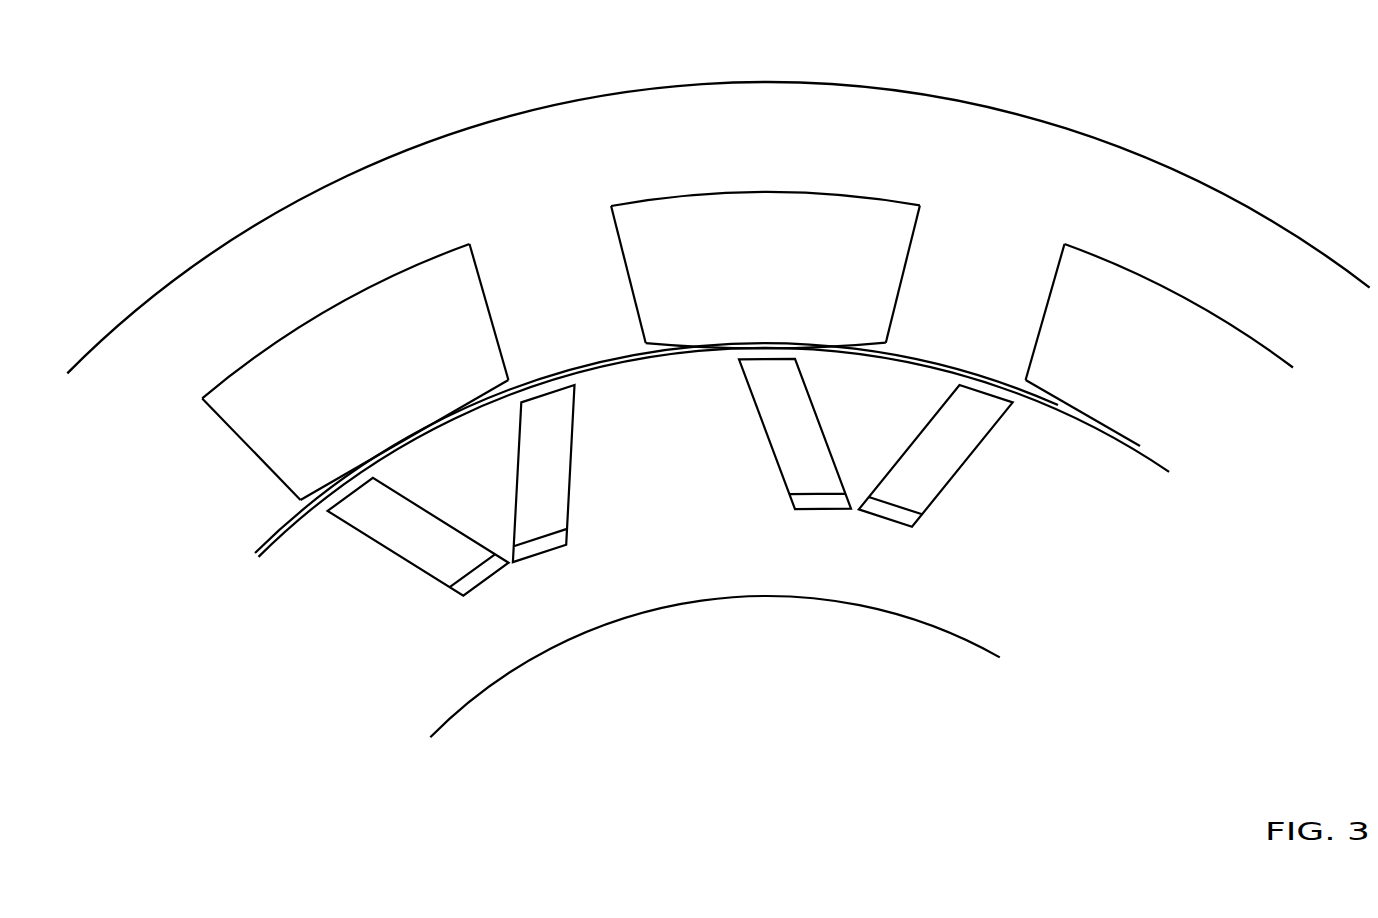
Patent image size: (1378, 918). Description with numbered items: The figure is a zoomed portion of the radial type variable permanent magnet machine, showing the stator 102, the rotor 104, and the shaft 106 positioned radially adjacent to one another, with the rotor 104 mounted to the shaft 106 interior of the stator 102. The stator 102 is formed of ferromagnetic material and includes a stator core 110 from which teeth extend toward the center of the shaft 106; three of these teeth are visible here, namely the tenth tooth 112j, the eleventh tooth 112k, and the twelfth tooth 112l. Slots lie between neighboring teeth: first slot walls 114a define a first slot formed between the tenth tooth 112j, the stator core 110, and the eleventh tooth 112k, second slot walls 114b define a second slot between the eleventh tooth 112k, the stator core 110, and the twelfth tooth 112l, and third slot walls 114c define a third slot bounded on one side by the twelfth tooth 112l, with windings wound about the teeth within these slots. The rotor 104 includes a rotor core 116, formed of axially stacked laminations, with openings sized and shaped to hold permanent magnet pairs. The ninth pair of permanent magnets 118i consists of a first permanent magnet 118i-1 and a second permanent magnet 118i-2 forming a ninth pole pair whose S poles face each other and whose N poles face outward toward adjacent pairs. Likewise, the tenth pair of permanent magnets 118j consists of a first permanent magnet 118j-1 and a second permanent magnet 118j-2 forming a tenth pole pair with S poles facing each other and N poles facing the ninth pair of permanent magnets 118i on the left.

The stator 102 is at (1078, 118).
The rotor 104 is at (1182, 464).
The shaft 106 is at (635, 679).
The stator core 110 is at (545, 164).
The tenth tooth 112j is at (228, 492).
The eleventh tooth 112k is at (597, 304).
The twelfth tooth 112l is at (998, 304).
The first slot walls 114a is at (488, 308).
The second slot walls 114b is at (902, 283).
The third slot walls 114c is at (1045, 320).
The rotor core 116 is at (722, 559).
The ninth pair of permanent magnets 118i is at (513, 487).
The first permanent magnet 118i-1 is at (428, 552).
The second permanent magnet 118i-2 is at (560, 485).
The tenth pair of permanent magnets 118j is at (913, 443).
The first permanent magnet 118j-1 is at (793, 452).
The second permanent magnet 118j-2 is at (942, 487).